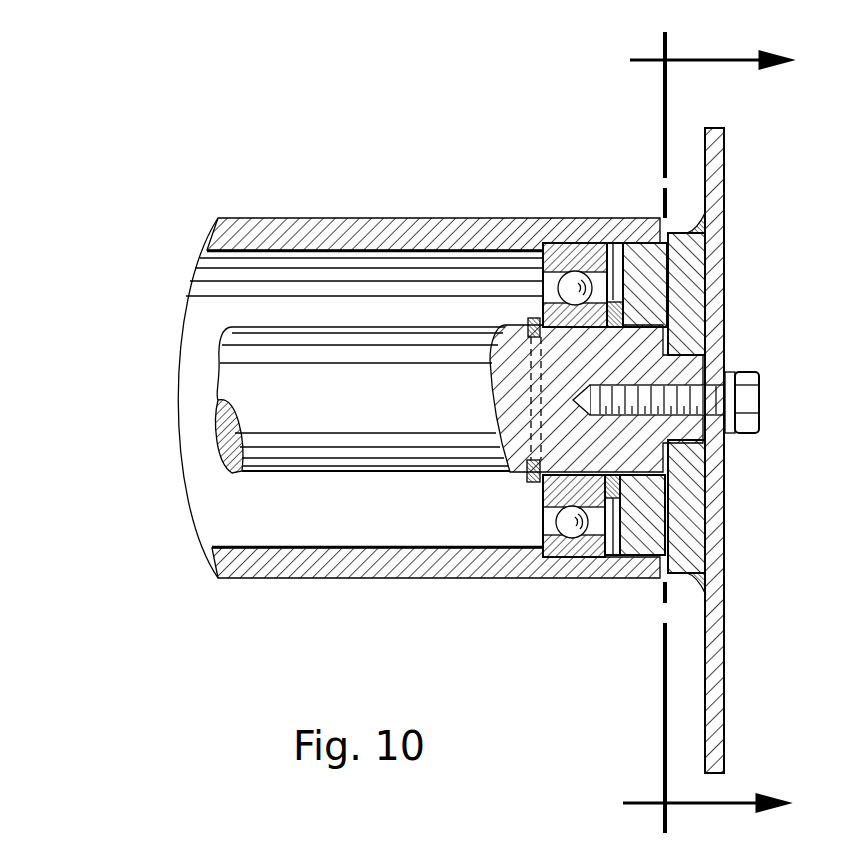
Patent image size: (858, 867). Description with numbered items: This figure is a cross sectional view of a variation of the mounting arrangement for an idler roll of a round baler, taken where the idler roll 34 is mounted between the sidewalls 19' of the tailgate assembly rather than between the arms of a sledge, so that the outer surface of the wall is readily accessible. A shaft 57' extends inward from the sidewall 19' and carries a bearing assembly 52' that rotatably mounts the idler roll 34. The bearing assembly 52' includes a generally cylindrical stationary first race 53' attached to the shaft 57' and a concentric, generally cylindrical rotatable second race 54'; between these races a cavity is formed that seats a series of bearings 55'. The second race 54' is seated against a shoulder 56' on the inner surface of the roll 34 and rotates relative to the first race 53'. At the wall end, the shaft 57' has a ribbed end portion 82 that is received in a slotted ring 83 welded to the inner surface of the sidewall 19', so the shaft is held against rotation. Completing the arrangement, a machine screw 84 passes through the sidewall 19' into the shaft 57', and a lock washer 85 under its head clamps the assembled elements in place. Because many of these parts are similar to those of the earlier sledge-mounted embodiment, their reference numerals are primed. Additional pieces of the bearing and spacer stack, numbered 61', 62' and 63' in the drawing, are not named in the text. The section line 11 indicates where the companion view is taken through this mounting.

The section line 11- 11 is at (688, 432).
The idler roll 34 is at (350, 218).
The shaft 57' is at (459, 428).
The lock washer 85 is at (730, 373).
The machine screw 84 is at (759, 400).
The sidewall 19' is at (766, 450).
The slotted ring 83 is at (702, 270).
The ribbed end portion 82 is at (705, 458).
The shoulder 56' is at (543, 238).
The spacer 61' is at (621, 217).
The retaining ring 62' is at (613, 355).
The upper key 63' is at (479, 257).
The first race 53' is at (492, 482).
The second race 54' is at (541, 516).
The bearings 55' is at (532, 576).
The bearing assembly 52' is at (423, 507).